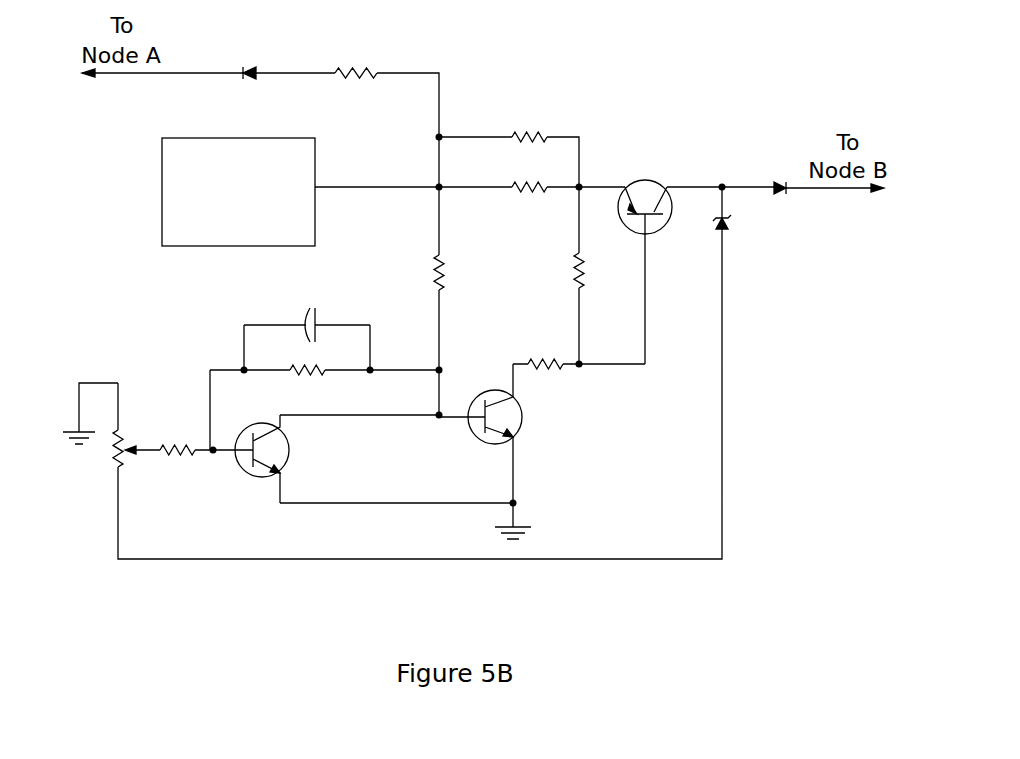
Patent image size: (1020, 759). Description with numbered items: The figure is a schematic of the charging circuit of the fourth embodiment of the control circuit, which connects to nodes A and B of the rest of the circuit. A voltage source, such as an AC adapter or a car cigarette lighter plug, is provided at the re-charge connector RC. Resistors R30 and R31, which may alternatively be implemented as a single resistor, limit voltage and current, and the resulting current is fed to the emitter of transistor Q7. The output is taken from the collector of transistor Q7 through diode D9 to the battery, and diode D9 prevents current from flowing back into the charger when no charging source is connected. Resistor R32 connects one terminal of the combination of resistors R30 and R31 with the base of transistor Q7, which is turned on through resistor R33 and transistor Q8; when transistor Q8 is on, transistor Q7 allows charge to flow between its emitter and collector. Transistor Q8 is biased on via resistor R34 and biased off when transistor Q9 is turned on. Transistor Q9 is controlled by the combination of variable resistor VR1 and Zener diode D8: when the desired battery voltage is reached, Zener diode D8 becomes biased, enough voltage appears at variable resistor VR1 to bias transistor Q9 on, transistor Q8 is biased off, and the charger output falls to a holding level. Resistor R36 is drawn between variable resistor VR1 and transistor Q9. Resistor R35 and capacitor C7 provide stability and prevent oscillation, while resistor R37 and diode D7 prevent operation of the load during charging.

The re-charge connector RC is at (188, 246).
The diode D7 is at (245, 61).
The resistor R37 is at (356, 61).
The resistor R30 is at (533, 124).
The resistor R31 is at (533, 174).
The transistor Q7 is at (645, 195).
The Zener diode D8 is at (705, 225).
The diode D9 is at (785, 202).
The resistor R34 is at (467, 273).
The resistor R32 is at (557, 270).
The resistor R33 is at (549, 353).
The capacitor C7 is at (314, 312).
The resistor R35 is at (312, 386).
The transistor Q9 is at (271, 459).
The transistor Q8 is at (514, 417).
The resistor R36 is at (182, 438).
The variable resistor VR1 is at (100, 457).